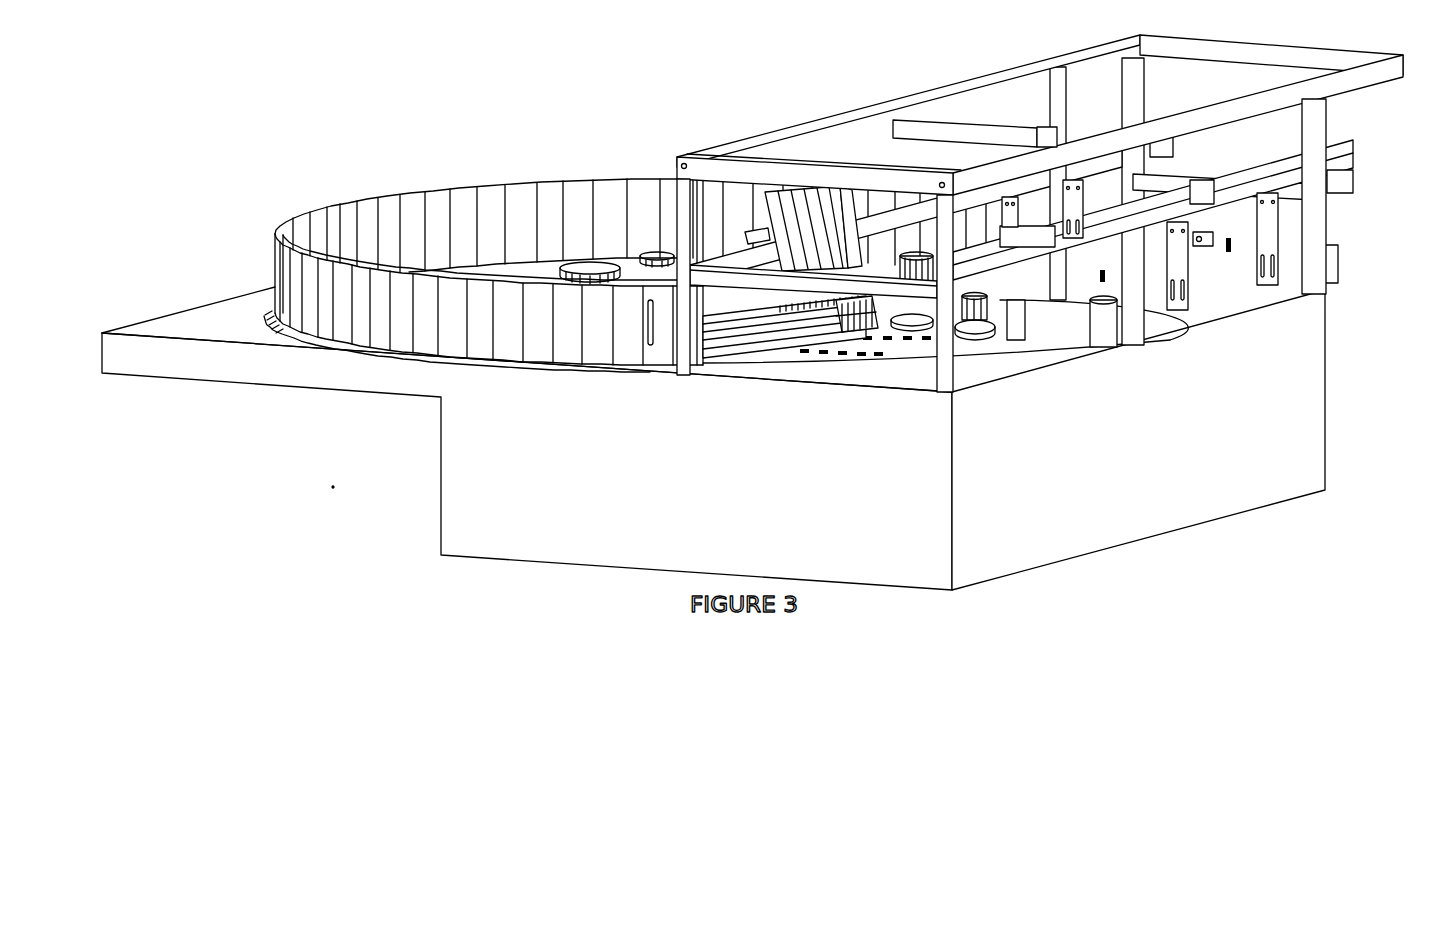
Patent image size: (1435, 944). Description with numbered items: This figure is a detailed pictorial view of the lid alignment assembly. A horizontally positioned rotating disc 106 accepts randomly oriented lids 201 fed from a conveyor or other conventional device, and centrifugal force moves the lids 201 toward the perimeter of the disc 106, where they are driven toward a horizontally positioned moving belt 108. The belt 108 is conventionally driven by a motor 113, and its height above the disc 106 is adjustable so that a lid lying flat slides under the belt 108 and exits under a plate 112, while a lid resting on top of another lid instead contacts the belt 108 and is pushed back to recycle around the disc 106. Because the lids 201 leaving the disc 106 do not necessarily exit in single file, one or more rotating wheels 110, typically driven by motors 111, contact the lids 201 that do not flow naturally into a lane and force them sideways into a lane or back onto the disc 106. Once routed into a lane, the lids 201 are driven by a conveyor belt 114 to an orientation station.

The rotating disc 106 is at (523, 272).
The lids 201 is at (588, 270).
The motor 113 is at (808, 242).
The rotating wheel 110 is at (810, 418).
The plate 112 is at (1017, 340).
The conveyor belt 114 is at (1155, 225).
The moving belt 108 is at (768, 336).
The motors 111 is at (958, 322).